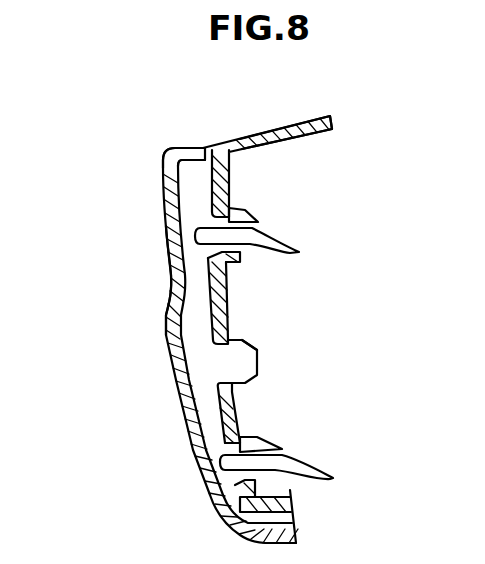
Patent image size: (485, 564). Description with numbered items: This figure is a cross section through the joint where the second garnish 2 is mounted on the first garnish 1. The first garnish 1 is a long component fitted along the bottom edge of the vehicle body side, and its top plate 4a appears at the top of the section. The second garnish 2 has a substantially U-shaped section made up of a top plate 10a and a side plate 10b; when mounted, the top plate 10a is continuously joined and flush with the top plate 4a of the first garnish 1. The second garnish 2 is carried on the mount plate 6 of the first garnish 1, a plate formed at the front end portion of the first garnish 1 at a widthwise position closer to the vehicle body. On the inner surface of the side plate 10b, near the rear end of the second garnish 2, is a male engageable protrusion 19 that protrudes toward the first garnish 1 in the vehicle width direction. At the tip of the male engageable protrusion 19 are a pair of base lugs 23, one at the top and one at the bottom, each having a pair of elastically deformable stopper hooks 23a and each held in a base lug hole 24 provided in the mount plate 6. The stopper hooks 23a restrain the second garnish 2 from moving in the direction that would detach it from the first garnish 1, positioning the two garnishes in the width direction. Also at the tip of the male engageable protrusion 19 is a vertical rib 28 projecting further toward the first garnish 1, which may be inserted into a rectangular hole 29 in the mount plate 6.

The second garnish 2 is at (136, 169).
The first garnish 1 is at (257, 133).
The top plate 4a is at (293, 132).
The top plate 10a is at (186, 151).
The side plate 10b is at (176, 236).
The male engageable protrusion 19 is at (198, 322).
The base lug 23 is at (261, 222).
The stopper hook 23a is at (272, 247).
The base lug hole 24 is at (229, 256).
The mount plate 6 is at (218, 309).
The rectangular hole 29 is at (240, 343).
The vertical rib 28 is at (245, 360).